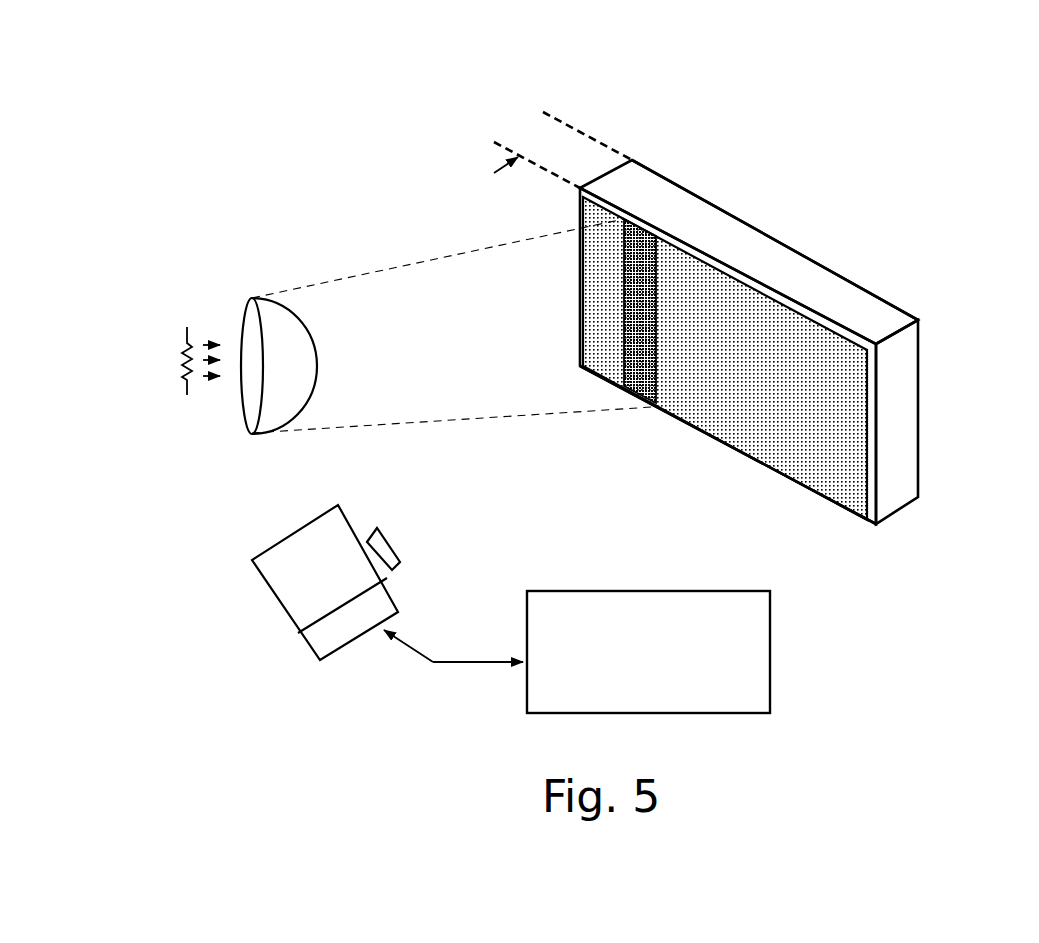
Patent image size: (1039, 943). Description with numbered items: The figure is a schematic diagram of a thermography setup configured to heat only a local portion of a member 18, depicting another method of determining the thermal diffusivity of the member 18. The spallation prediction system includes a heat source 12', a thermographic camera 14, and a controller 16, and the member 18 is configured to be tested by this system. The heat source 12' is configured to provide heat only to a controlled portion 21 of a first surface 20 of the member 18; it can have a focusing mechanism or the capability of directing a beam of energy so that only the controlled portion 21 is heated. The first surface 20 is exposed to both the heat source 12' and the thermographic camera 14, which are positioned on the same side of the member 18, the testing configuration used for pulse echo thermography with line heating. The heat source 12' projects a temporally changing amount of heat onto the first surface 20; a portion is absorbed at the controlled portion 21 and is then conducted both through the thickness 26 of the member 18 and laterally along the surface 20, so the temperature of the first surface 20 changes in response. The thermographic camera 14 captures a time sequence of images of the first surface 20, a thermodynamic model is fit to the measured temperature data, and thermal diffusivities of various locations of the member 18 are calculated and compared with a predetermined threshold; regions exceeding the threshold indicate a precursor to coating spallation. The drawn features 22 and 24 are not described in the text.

The heat source 12' is at (382, 359).
The thermographic camera 14 is at (282, 613).
The controller 16 is at (601, 652).
The member 18 is at (897, 477).
The first surface 20 is at (702, 452).
The controlled portion 21 is at (626, 402).
The top edge 22 is at (832, 252).
The textured surface region 24 is at (778, 455).
The thickness 26 is at (567, 122).